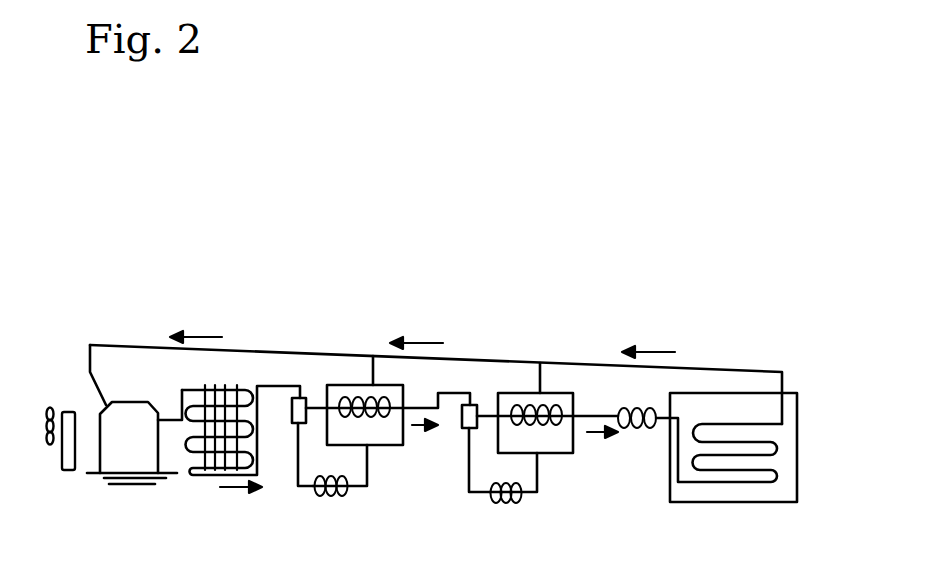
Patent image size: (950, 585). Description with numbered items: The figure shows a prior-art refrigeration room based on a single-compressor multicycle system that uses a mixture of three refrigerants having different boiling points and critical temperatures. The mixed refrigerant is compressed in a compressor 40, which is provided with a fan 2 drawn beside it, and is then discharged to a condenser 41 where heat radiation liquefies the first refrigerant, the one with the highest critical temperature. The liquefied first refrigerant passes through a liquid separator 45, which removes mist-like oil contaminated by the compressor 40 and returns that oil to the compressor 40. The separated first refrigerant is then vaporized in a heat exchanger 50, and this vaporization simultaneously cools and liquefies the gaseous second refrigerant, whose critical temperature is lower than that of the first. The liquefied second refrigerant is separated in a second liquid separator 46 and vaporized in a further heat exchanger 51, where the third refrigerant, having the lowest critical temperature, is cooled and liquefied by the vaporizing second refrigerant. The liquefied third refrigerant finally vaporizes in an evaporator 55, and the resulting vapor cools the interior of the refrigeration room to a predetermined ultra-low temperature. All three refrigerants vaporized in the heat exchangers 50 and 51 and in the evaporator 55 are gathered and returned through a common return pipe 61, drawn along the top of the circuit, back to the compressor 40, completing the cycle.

The fan 2 is at (53, 458).
The compressor 40 is at (113, 463).
The condenser 41 is at (207, 470).
The liquid separator 45 is at (292, 424).
The liquid separator 46 is at (458, 426).
The heat exchanger 50 is at (384, 443).
The heat exchanger 51 is at (563, 453).
The evaporator 55 is at (716, 502).
The common return pipe 61 is at (305, 352).